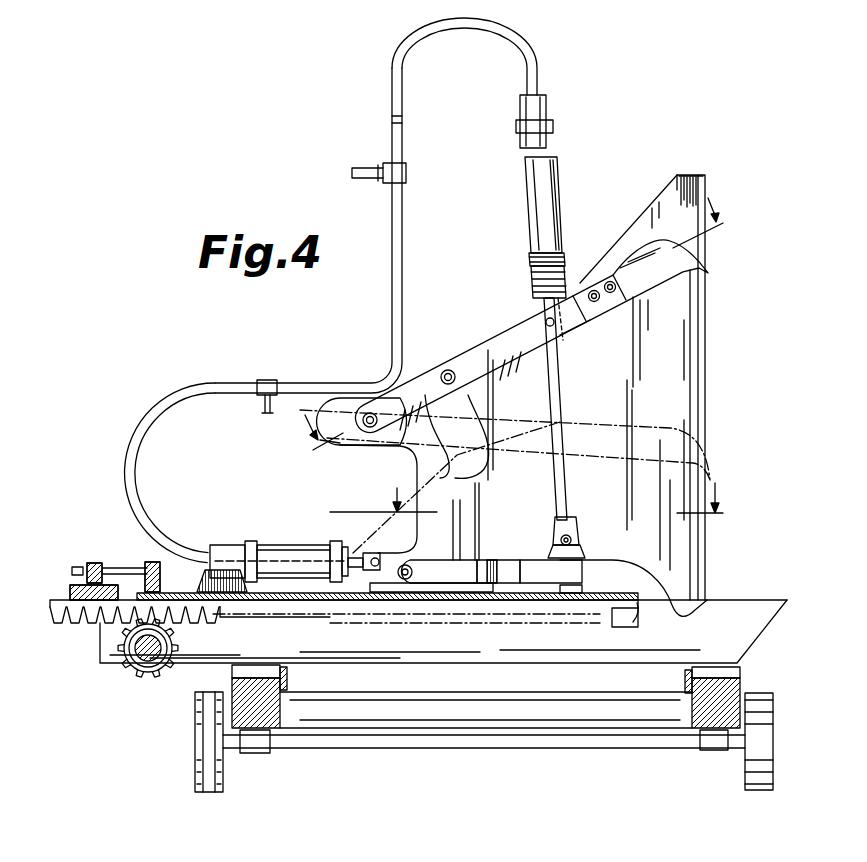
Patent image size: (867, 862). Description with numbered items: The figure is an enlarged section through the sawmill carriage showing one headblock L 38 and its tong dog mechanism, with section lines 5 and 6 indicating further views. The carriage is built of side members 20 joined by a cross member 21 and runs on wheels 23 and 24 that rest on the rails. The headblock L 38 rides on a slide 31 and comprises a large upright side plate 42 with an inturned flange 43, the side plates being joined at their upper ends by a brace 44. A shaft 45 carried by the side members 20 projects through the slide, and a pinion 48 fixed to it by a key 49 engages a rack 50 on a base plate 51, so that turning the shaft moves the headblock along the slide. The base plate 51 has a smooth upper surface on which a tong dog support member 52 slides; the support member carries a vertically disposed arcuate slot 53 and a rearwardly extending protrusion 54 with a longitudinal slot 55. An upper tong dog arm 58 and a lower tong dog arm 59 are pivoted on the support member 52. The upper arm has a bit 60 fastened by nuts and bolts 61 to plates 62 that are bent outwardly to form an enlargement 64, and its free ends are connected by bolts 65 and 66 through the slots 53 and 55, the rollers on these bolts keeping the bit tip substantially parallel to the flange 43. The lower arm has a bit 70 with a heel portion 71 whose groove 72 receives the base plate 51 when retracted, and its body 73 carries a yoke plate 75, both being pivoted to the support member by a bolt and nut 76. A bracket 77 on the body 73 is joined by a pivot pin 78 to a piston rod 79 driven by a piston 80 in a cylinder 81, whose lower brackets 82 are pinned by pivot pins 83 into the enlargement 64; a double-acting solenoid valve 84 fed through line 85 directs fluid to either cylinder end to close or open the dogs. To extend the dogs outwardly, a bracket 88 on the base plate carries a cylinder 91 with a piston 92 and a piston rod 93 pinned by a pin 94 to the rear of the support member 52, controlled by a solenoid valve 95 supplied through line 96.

The section line 5- 5 is at (515, 323).
The section line 6- 6 is at (519, 481).
The side members 20 is at (268, 712).
The cross member 21 is at (387, 703).
The wheel 23 is at (745, 767).
The wheel 24 is at (198, 740).
The slide 31 is at (478, 655).
The headblock L 38 is at (685, 350).
The upright side plate 42 is at (658, 200).
The inturned flange 43 is at (706, 303).
The brace 44 is at (702, 163).
The shaft 45 is at (148, 661).
The pinion 48 is at (175, 635).
The key 49 is at (138, 643).
The rack 50 is at (238, 612).
The base plate 51 is at (345, 614).
The tong dog support member 52 is at (478, 502).
The arcuate slot 53 is at (430, 458).
The protrusion 54 is at (340, 440).
The longitudinal slot 55 is at (330, 414).
The upper tong dog arm 58 is at (508, 318).
The lower tong dog arm 59 is at (615, 560).
The bit 60 is at (648, 278).
The nuts and bolts 61 is at (610, 296).
The plate 62 is at (595, 277).
The enlargement 64 is at (575, 322).
The nut and bolt 65 is at (450, 368).
The nut and bolt 66 is at (378, 415).
The bit 70 is at (707, 603).
The heel portion 71 is at (618, 630).
The groove 72 is at (637, 612).
The body 73 is at (540, 554).
The yoke plate 75 is at (503, 562).
The bolt and nut 76 is at (412, 568).
The bracket 77 is at (580, 552).
The pivot pin 78 is at (578, 528).
The piston rod 79 is at (556, 468).
The piston 80 is at (528, 262).
The cylinder 81 is at (528, 187).
The brackets 82 is at (530, 300).
The pivot pin 83 is at (563, 332).
The double-acting solenoid valve 84 is at (548, 105).
The line 85 is at (432, 33).
The bracket 88 is at (208, 585).
The cylinder 91 is at (312, 548).
The piston 92 is at (272, 548).
The piston rod 93 is at (357, 555).
The pin 94 is at (375, 555).
The double-acting solenoid valve 95 is at (230, 534).
The line 96 is at (133, 475).